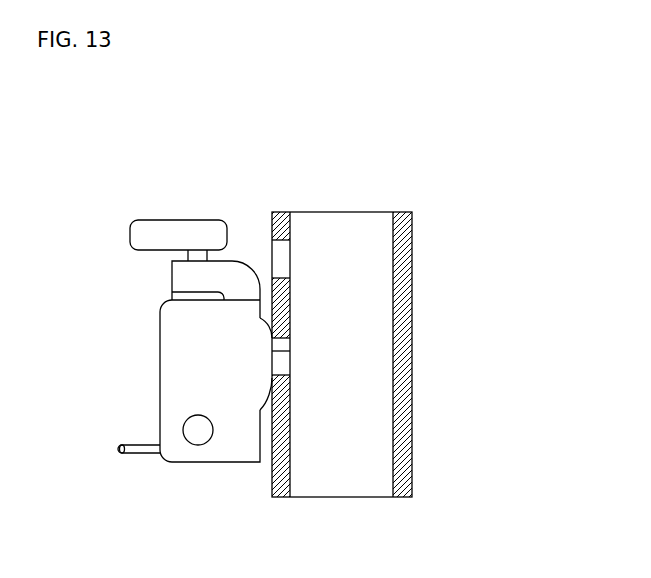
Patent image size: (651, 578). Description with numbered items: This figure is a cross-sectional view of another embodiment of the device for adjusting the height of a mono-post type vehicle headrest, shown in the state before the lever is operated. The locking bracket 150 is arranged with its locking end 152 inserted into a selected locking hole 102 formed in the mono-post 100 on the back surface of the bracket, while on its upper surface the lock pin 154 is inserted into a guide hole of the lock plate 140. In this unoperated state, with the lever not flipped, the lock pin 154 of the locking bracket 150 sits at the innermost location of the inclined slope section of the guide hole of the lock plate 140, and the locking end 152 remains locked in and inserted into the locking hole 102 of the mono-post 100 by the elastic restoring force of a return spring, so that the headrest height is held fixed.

The mono-post 100 is at (425, 423).
The locking hole 102 is at (285, 375).
The lock plate 140 is at (165, 213).
The locking bracket 150 is at (150, 389).
The locking end 152 is at (282, 362).
The lock pin 154 is at (187, 253).